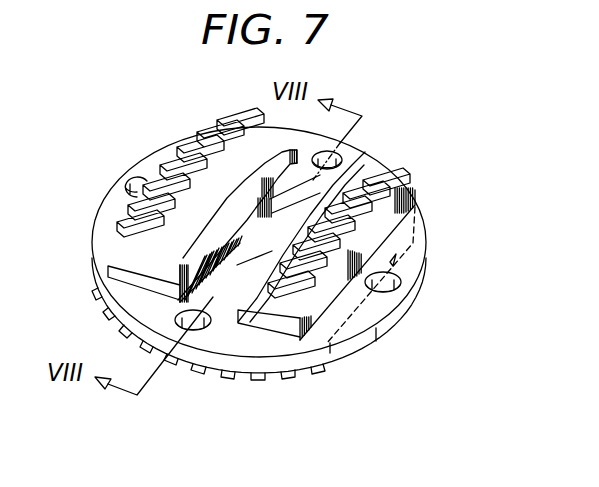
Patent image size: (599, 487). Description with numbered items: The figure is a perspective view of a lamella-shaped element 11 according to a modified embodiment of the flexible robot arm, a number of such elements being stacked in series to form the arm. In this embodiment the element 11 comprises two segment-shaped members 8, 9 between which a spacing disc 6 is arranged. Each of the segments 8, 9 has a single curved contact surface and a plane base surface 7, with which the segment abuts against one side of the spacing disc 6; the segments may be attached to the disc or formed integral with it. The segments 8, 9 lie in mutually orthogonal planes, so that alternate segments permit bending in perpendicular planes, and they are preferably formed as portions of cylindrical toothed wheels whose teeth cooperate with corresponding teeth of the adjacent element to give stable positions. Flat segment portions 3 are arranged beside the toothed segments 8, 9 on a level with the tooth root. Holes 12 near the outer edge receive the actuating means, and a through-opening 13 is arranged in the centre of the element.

The flat segment portions 3 is at (248, 168).
The spacing disc 6 is at (378, 330).
The plane base surface 7 is at (370, 245).
The segment-shaped member 8 is at (208, 137).
The segment-shaped member 9 is at (248, 374).
The element 11 is at (430, 220).
The holes 12 is at (384, 288).
The through-opening 13 is at (267, 225).